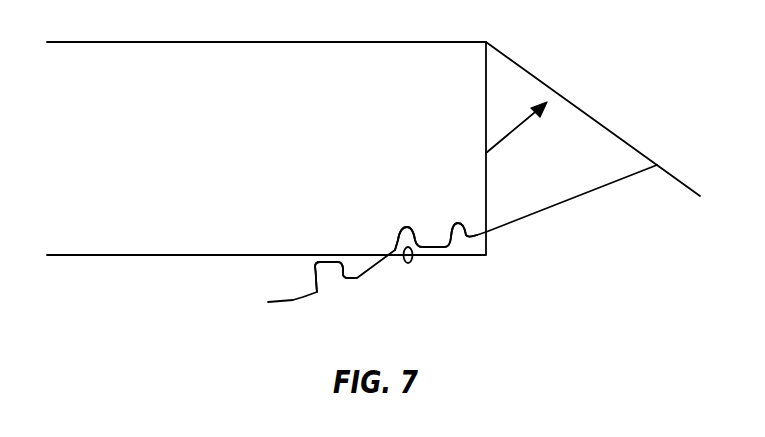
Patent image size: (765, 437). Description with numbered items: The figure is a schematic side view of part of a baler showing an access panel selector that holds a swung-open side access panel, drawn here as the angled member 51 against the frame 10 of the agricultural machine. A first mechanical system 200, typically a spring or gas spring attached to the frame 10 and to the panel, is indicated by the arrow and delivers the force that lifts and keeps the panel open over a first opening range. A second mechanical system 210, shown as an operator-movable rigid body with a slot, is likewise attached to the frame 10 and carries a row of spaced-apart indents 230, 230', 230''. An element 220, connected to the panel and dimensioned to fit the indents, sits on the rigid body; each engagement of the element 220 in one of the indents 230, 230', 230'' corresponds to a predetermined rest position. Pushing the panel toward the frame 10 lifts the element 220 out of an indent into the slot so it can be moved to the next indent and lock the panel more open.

The frame 10 is at (410, 42).
The cutting tool / blade tip 51 is at (597, 118).
The first mechanical system 200 is at (513, 132).
The second mechanical system 210 is at (298, 298).
The element 220 is at (415, 258).
The first indent 230 is at (310, 238).
The second indent 230' is at (387, 205).
The third indent 230'' is at (447, 191).